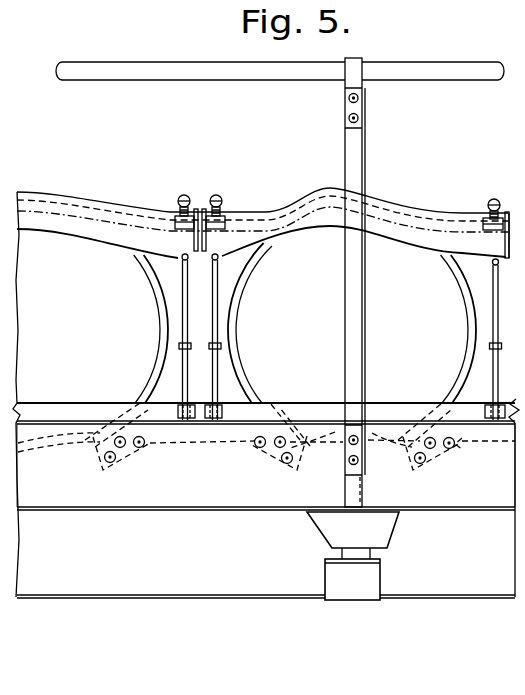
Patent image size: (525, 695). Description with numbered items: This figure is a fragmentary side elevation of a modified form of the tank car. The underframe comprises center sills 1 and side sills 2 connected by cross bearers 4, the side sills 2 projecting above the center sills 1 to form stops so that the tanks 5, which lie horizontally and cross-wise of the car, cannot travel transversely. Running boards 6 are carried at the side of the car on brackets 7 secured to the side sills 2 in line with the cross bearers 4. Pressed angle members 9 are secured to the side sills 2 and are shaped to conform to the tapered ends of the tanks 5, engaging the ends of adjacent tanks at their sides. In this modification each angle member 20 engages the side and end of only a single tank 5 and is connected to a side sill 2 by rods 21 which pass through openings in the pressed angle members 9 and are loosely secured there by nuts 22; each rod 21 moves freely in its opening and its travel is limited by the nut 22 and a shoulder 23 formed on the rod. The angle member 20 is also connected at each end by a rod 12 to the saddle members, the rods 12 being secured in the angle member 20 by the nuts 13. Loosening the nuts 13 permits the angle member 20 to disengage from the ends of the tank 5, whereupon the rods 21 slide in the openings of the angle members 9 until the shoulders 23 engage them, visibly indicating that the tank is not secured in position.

The center sills 1 is at (266, 552).
The side sills 2 is at (266, 465).
The cross bearers 4 is at (357, 582).
The tanks 5 is at (294, 323).
The running boards 6 is at (199, 635).
The brackets 7 is at (345, 488).
The pressed angle members 9 is at (234, 388).
The rods 12 is at (217, 196).
The nuts 13 is at (176, 218).
The angle member 20 is at (138, 222).
The rods 21 is at (184, 322).
The nuts 22 is at (190, 424).
The shoulder 23 is at (212, 346).